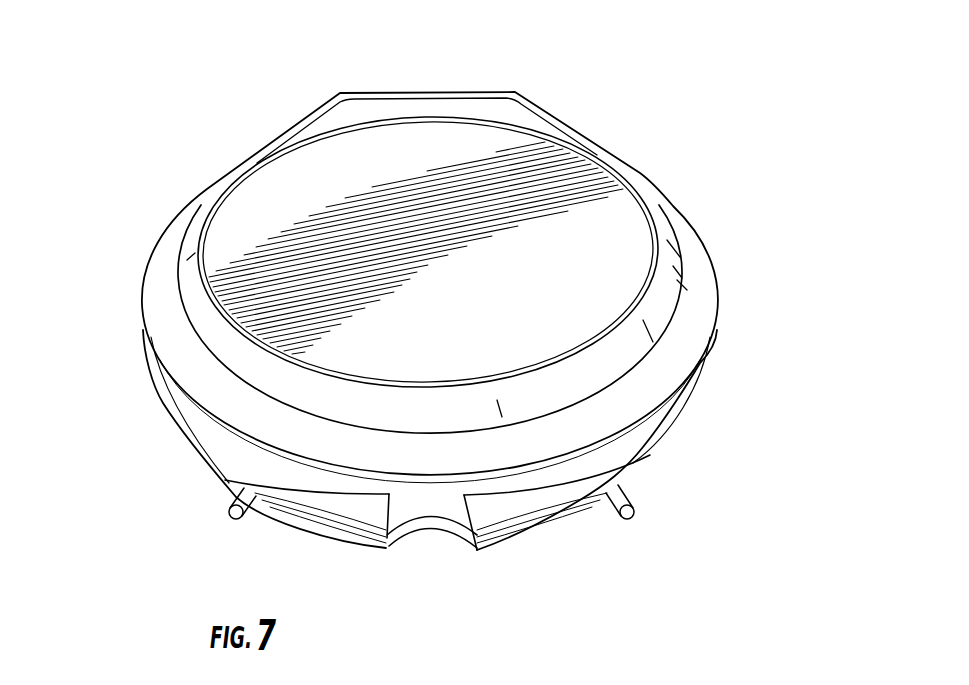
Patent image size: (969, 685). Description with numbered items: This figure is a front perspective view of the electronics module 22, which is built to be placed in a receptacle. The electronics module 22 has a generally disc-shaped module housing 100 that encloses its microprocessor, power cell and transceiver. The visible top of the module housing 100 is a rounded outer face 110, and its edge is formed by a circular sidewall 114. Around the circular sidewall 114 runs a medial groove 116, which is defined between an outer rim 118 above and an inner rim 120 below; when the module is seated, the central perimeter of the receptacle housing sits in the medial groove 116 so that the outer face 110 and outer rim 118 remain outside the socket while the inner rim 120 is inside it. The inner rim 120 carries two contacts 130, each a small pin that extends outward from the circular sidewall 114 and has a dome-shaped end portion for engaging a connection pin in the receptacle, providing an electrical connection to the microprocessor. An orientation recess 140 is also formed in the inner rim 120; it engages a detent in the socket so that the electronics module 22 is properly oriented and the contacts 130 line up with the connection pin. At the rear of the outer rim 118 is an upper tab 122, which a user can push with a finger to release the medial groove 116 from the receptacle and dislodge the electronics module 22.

The electronics module 22 is at (730, 122).
The module housing 100 is at (707, 270).
The rounded outer face 110 is at (253, 193).
The circular sidewall 114 is at (158, 253).
The medial groove 116 is at (526, 517).
The outer rim 118 is at (717, 327).
The inner rim 120 is at (690, 424).
The upper tab 122 is at (443, 107).
The contact 130 is at (233, 513).
The orientation recess 140 is at (427, 548).